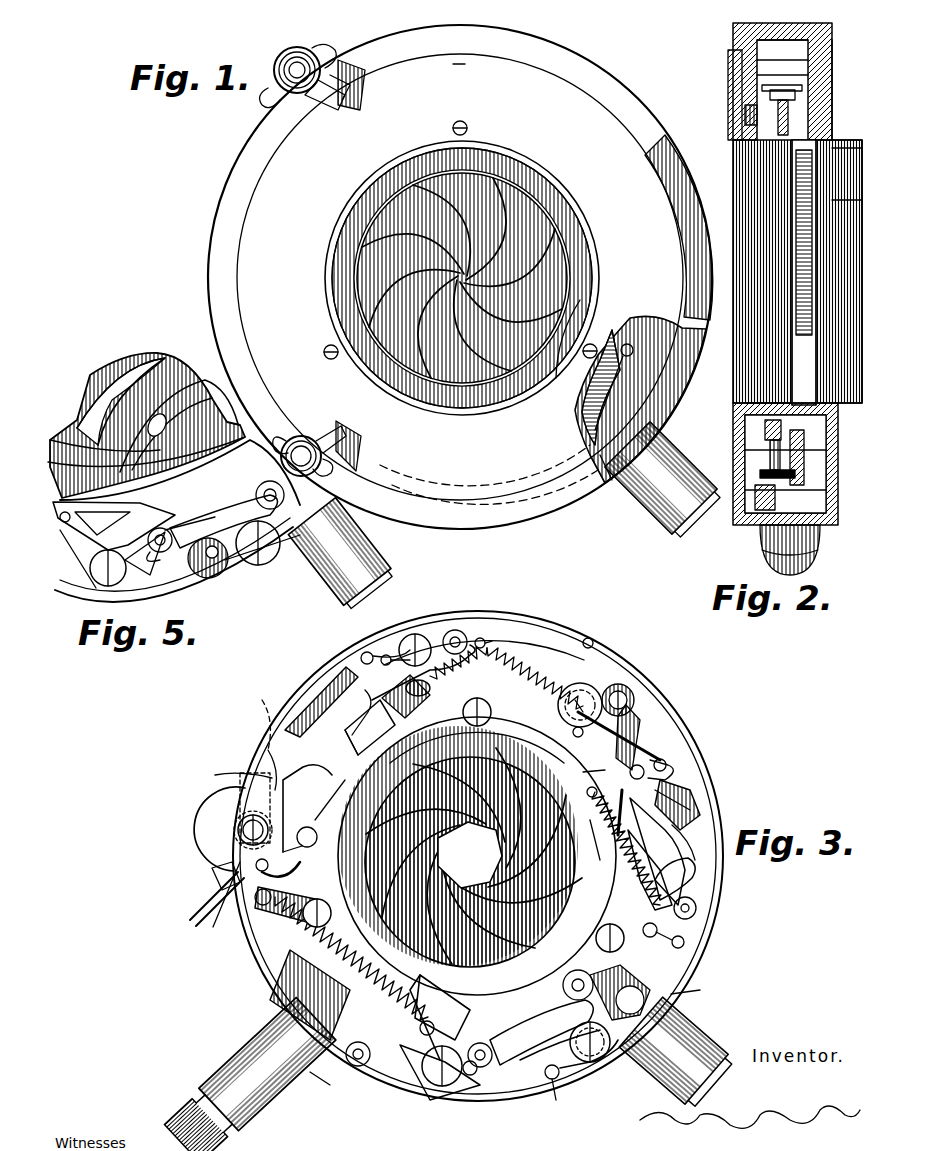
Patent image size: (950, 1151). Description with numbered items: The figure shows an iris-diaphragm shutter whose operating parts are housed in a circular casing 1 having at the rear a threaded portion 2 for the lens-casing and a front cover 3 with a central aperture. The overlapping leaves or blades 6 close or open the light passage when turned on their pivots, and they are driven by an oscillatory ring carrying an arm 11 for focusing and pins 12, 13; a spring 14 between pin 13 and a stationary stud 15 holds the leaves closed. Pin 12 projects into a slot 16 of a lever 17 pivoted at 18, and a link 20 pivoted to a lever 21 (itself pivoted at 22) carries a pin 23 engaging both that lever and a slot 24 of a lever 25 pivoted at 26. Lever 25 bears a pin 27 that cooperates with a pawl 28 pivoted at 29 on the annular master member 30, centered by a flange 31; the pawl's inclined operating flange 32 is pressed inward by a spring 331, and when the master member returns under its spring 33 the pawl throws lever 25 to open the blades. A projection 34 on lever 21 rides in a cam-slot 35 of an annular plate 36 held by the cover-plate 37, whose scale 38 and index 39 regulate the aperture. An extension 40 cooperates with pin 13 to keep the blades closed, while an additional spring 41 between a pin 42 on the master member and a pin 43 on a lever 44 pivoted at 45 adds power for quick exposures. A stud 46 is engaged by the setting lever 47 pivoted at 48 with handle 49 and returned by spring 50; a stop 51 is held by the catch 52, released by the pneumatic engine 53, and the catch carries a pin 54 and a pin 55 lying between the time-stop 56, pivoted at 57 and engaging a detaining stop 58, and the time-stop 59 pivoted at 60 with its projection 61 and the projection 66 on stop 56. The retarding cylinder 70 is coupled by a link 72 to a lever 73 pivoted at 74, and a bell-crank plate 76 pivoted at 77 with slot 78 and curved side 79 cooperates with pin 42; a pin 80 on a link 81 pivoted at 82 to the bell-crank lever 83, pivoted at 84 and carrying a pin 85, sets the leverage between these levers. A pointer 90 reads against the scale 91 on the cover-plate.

In FIG. 2, the casing 1 is at (790, 40).
In FIG. 3, the casing 1 is at (484, 625).
In FIG. 2, the threaded portion 2 is at (835, 142).
In FIG. 2, the front cover 3 is at (733, 152).
In FIG. 1, the leaves or blades 6 is at (462, 278).
In FIG. 2, the leaves or blades 6 is at (820, 440).
In FIG. 5, the leaves or blades 6 is at (147, 425).
In FIG. 3, the leaves or blades 6 is at (477, 856).
In FIG. 3, the arm 11 is at (588, 638).
In FIG. 3, the pin 12 is at (590, 840).
In FIG. 3, the pin 13 is at (418, 680).
In FIG. 3, the spring 14 is at (464, 703).
In FIG. 2, the stationary stud 15 is at (826, 60).
In FIG. 3, the stationary stud 15 is at (506, 665).
In FIG. 3, the slot 16 is at (690, 836).
In FIG. 3, the lever 17 is at (685, 810).
In FIG. 3, the pivot 18 is at (680, 802).
In FIG. 3, the link 20 is at (662, 855).
In FIG. 3, the lever 21 is at (643, 848).
In FIG. 3, the pivot 22 is at (605, 930).
In FIG. 3, the pin 23 is at (663, 758).
In FIG. 3, the slot 24 is at (665, 765).
In FIG. 3, the lever 25 is at (650, 735).
In FIG. 3, the pivot 26 is at (632, 720).
In FIG. 3, the pin or stud 27 is at (678, 790).
In FIG. 3, the pawl 28 is at (630, 772).
In FIG. 3, the pivot 29 is at (572, 715).
In FIG. 5, the master member 30 is at (174, 519).
In FIG. 3, the master member 30 is at (477, 740).
In FIG. 1, the flange 31 is at (690, 140).
In FIG. 2, the flange 31 is at (802, 242).
In FIG. 3, the operating flange 32 is at (587, 792).
In FIG. 3, the spring 331 is at (583, 763).
In FIG. 3, the spring 33 is at (684, 894).
In FIG. 1, the projection 34 is at (660, 392).
In FIG. 1, the cam-slot 35 is at (628, 343).
In FIG. 1, the annular plate or ring 36 is at (606, 480).
In FIG. 1, the cover-plate 37 is at (531, 373).
In FIG. 1, the scale 38 is at (378, 478).
In FIG. 1, the index 39 is at (318, 438).
In FIG. 3, the index 39 is at (676, 948).
In FIG. 3, the extension 40 is at (405, 704).
In FIG. 3, the spring 41 is at (418, 995).
In FIG. 5, the pin 42 is at (66, 524).
In FIG. 3, the pin 42 is at (374, 1057).
In FIG. 3, the pin 43 is at (270, 910).
In FIG. 3, the lever 44 is at (300, 940).
In FIG. 3, the pivot 45 is at (320, 975).
In FIG. 3, the stud or projection 46 is at (307, 847).
In FIG. 3, the operating and setting lever 47 is at (242, 811).
In FIG. 3, the pivot 48 is at (257, 860).
In FIG. 3, the handle 49 is at (200, 890).
In FIG. 3, the spring 50 is at (262, 780).
In FIG. 3, the stop or projection 51 is at (330, 799).
In FIG. 3, the catch or lever 52 is at (262, 750).
In FIG. 3, the pneumatic engine or pump 53 is at (315, 1084).
In FIG. 3, the pin or projection 54 is at (220, 899).
In FIG. 3, the pin 55 is at (231, 773).
In FIG. 3, the time-stop 56 is at (318, 720).
In FIG. 3, the pivot 57 is at (320, 700).
In FIG. 3, the detaining stop or projection 58 is at (365, 727).
In FIG. 3, the time-stop 59 is at (368, 652).
In FIG. 3, the pivot 60 is at (455, 630).
In FIG. 3, the projection 61 is at (382, 658).
In FIG. 3, the projection 66 is at (348, 690).
In FIG. 1, the cylinder 70 is at (668, 505).
In FIG. 5, the cylinder 70 is at (360, 558).
In FIG. 3, the cylinder 70 is at (690, 1040).
In FIG. 3, the link 72 is at (695, 995).
In FIG. 5, the lever 73 is at (275, 528).
In FIG. 3, the lever 73 is at (628, 985).
In FIG. 5, the pivot 74 is at (270, 565).
In FIG. 3, the pivot 74 is at (540, 1070).
In FIG. 5, the lever or plate 76 is at (75, 585).
In FIG. 3, the lever or plate 76 is at (420, 1050).
In FIG. 5, the pivot 77 is at (158, 562).
In FIG. 3, the pivot 77 is at (438, 1086).
In FIG. 3, the slot 78 is at (470, 1076).
In FIG. 3, the curved side 79 is at (420, 1030).
In FIG. 5, the pin 80 is at (181, 537).
In FIG. 3, the pin 80 is at (488, 1050).
In FIG. 5, the link 81 is at (224, 521).
In FIG. 3, the link 81 is at (541, 1032).
In FIG. 5, the pivot 82 is at (270, 494).
In FIG. 3, the pivot 82 is at (578, 987).
In FIG. 3, the bell-crank lever 83 is at (601, 1037).
In FIG. 3, the pivot 84 is at (600, 1068).
In FIG. 3, the pin or projection 85 is at (558, 1097).
In FIG. 1, the index or pointer 90 is at (330, 104).
In FIG. 3, the index or pointer 90 is at (482, 617).
In FIG. 1, the scale 91 is at (462, 70).